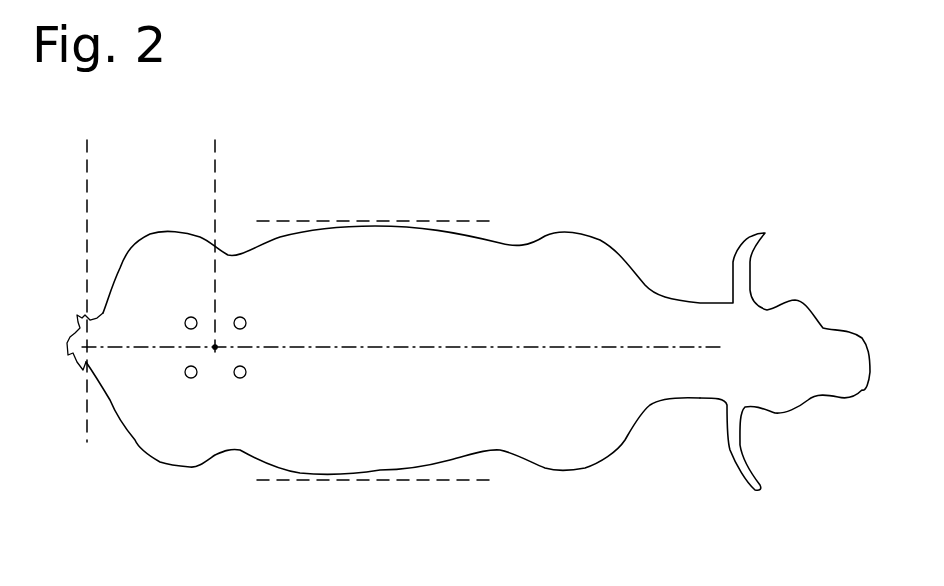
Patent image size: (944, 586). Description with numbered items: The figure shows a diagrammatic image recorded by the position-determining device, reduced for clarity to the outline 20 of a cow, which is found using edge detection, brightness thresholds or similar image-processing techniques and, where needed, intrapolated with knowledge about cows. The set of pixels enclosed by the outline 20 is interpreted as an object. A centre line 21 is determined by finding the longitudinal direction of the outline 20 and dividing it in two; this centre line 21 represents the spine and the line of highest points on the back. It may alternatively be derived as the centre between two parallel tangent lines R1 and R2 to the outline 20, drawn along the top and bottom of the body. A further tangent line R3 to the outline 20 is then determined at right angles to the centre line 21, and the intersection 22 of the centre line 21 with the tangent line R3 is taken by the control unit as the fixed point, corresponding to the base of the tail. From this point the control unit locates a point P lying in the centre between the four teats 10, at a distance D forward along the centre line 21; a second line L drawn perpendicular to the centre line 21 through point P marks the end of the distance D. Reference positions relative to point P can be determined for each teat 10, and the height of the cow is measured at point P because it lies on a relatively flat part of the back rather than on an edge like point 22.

The teat 10 is at (240, 378).
The outline 20 is at (578, 232).
The centre line 21 is at (545, 348).
The intersection 22 is at (95, 336).
The point P is at (213, 347).
The distance D is at (213, 152).
The reference line L is at (215, 185).
The tangent line R1 is at (362, 221).
The tangent line R2 is at (383, 481).
The tangent line R3 is at (87, 178).